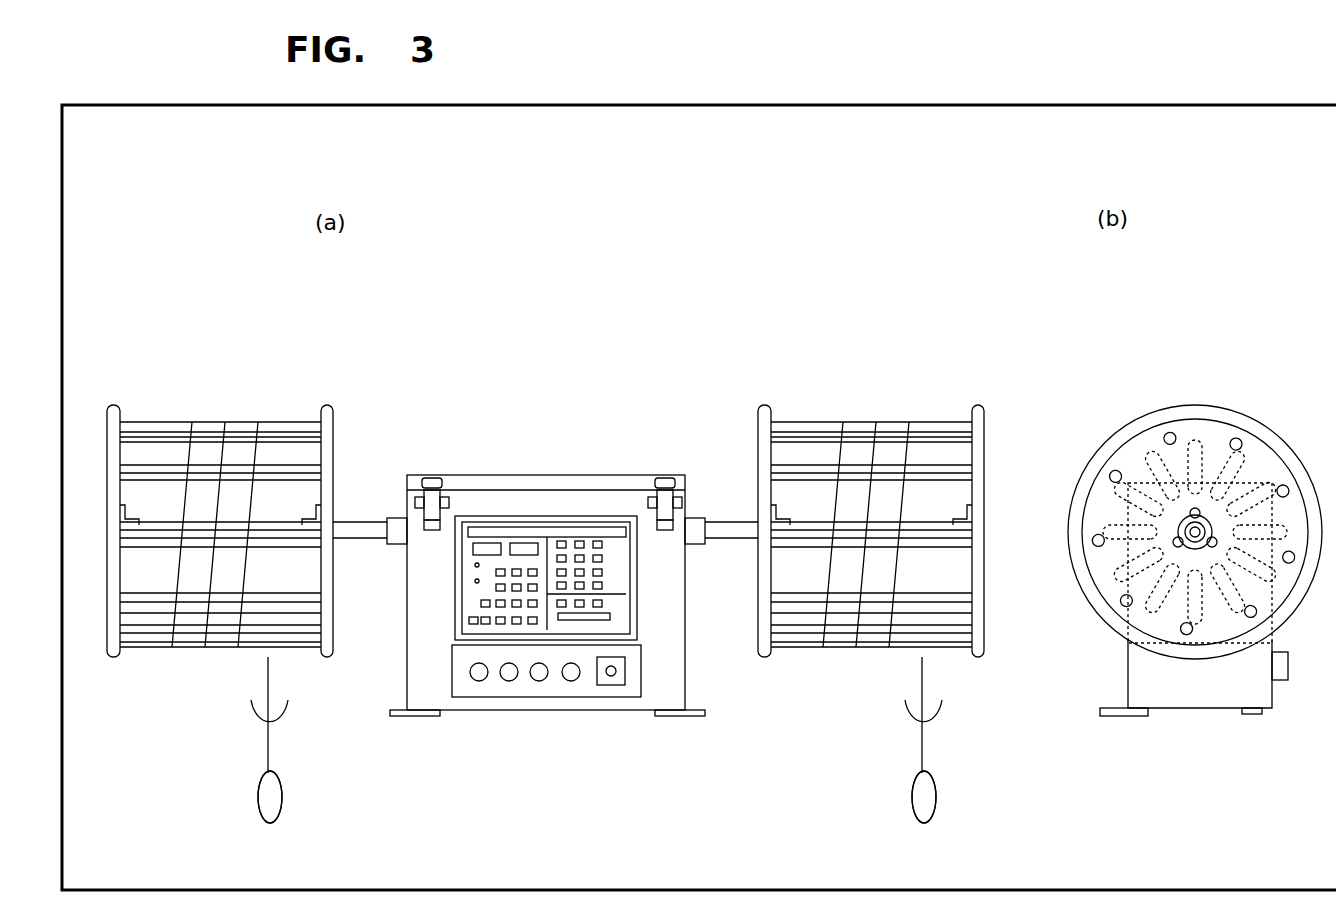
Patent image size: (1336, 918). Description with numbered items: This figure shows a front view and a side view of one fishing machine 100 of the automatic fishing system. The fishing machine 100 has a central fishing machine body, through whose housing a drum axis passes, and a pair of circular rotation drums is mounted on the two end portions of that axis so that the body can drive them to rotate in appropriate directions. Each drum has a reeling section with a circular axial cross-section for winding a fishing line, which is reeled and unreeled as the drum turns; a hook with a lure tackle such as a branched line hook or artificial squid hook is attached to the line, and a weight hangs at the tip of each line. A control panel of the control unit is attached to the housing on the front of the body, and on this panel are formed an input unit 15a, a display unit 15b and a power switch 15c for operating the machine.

The fishing machine 100 is at (707, 210).
The input unit 15a is at (615, 583).
The display unit 15b is at (475, 590).
The power switch 15c is at (610, 688).